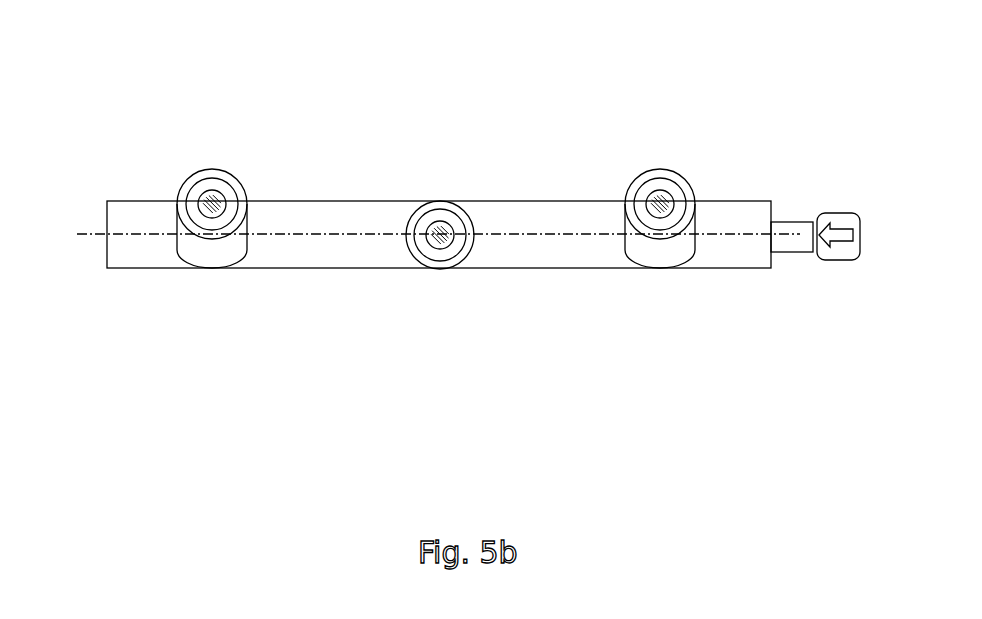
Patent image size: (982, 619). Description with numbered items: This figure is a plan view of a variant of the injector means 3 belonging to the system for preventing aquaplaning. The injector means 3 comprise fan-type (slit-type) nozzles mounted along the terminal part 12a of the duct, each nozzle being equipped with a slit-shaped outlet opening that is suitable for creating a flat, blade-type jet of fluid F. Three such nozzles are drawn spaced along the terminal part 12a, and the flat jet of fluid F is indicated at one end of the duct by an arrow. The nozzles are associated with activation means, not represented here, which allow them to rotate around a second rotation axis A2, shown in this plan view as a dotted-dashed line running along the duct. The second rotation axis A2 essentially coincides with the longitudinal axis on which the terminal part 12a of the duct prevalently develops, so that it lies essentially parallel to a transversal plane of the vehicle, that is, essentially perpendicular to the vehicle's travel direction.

The injector means 3 is at (136, 162).
The terminal part of the duct 12a is at (753, 268).
The second rotation axis A2 is at (422, 234).
The flat jet of fluid F is at (848, 236).